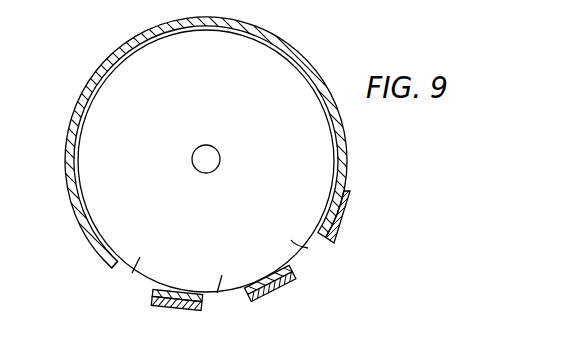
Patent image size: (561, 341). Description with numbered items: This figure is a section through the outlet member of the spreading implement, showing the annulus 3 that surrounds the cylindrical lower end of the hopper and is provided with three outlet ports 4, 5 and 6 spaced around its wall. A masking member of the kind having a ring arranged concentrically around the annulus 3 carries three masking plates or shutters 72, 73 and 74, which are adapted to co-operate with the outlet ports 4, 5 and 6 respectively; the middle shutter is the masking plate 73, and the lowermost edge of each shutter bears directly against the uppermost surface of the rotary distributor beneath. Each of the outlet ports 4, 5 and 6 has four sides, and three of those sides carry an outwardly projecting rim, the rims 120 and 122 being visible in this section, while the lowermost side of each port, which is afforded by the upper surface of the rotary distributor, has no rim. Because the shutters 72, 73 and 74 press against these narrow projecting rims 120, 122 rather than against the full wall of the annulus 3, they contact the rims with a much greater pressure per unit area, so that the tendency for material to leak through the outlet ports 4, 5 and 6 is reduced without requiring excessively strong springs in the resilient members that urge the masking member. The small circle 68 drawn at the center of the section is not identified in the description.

The annulus 3 is at (66, 125).
The outlet port 4 is at (292, 236).
The outlet port 5 is at (223, 274).
The outlet port 6 is at (138, 256).
The central pipe 68 is at (209, 156).
The masking plate or shutter 72 is at (343, 235).
The masking plate or shutter 73 is at (281, 294).
The masking plate or shutter 74 is at (175, 307).
The outwardly projecting rim 120 is at (112, 264).
The outwardly projecting rim 122 is at (151, 290).